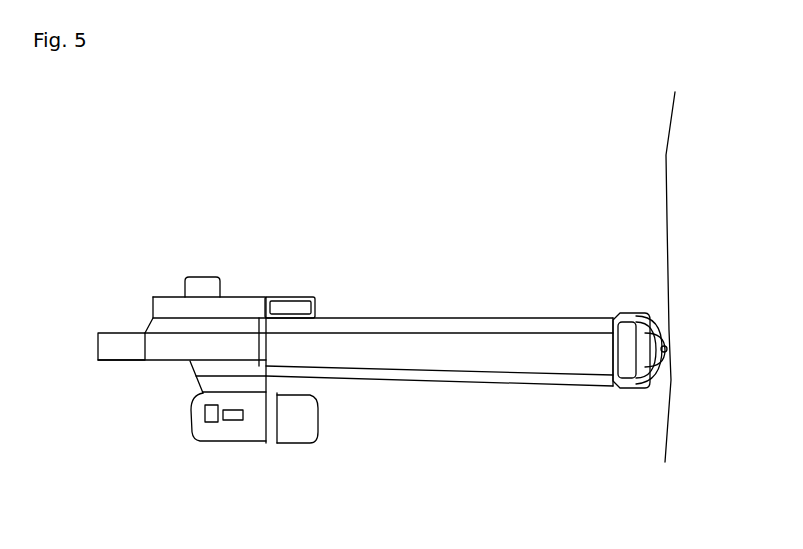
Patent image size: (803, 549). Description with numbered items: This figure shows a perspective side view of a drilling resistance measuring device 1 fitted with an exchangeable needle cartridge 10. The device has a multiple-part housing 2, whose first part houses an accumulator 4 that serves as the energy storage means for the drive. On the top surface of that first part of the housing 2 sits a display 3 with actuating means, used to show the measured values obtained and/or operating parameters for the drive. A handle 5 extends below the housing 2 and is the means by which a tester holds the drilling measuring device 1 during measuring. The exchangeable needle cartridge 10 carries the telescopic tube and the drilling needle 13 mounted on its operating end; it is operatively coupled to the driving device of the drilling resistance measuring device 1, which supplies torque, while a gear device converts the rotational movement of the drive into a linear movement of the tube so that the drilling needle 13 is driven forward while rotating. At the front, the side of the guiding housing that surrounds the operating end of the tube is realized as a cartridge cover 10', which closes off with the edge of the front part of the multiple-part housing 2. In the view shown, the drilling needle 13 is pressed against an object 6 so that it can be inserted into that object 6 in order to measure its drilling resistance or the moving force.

The drilling resistance measuring device 1 is at (380, 365).
The multiple-part housing 2 is at (395, 355).
The display 3 is at (260, 297).
The accumulator 4 is at (228, 428).
The handle 5 is at (117, 350).
The object 6 is at (697, 215).
The exchangeable needle cartridge 10 is at (602, 305).
The cartridge cover 10' is at (631, 317).
The drilling needle 13 is at (662, 385).